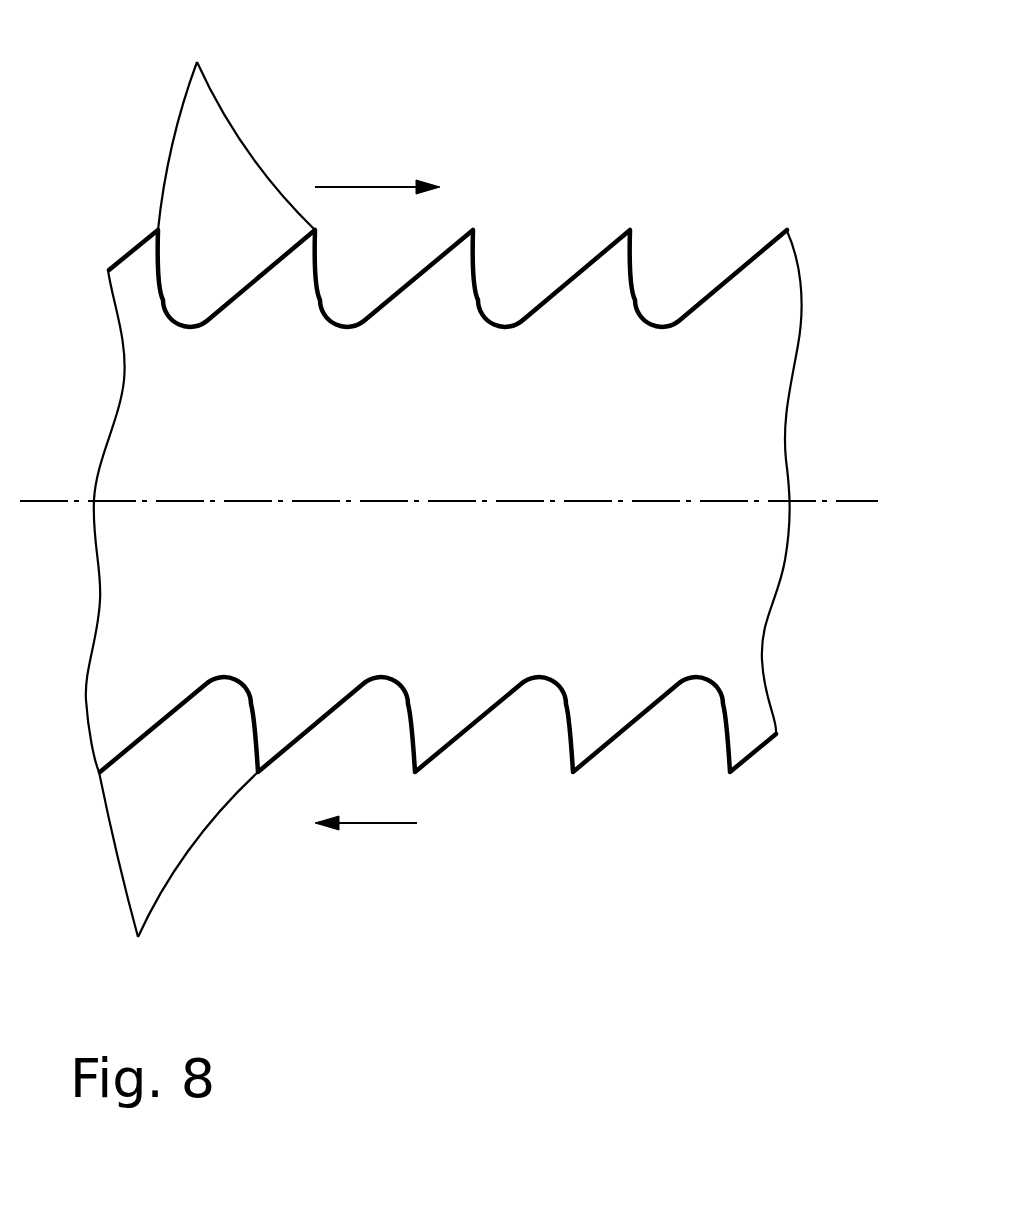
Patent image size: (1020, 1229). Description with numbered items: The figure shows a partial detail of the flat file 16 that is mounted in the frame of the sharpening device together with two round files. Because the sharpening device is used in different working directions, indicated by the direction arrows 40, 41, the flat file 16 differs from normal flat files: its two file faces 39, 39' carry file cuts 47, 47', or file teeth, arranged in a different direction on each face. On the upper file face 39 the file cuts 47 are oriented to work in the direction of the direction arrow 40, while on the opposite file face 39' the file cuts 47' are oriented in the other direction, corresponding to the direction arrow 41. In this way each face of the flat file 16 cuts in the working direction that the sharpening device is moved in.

The flat file 16 is at (660, 362).
The file face 39 is at (448, 171).
The file face 39' is at (438, 832).
The direction arrow 40 is at (372, 183).
The direction arrow 41 is at (375, 825).
The file cut 47 is at (236, 123).
The file cut 47' is at (178, 878).